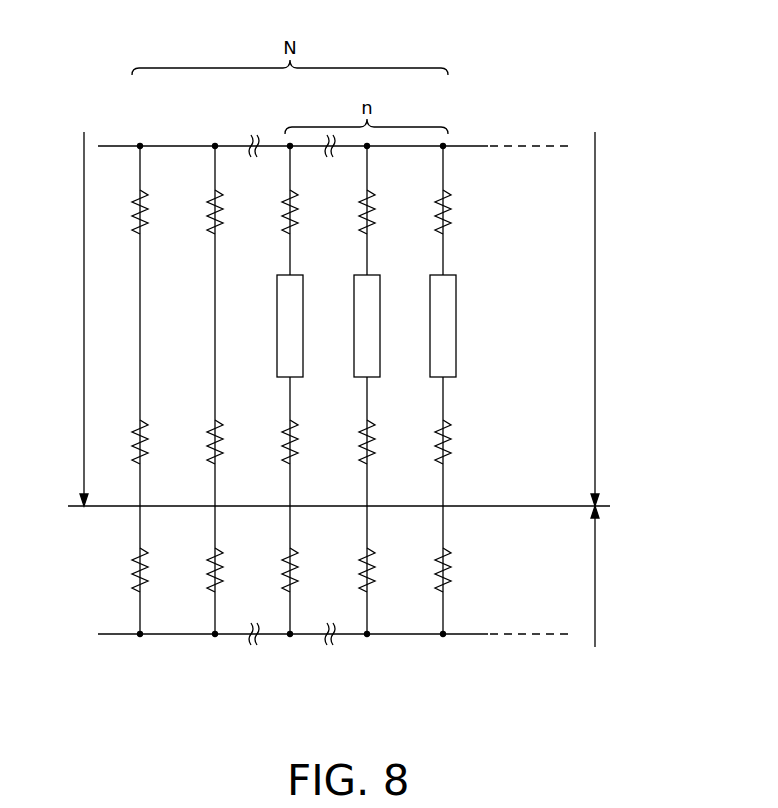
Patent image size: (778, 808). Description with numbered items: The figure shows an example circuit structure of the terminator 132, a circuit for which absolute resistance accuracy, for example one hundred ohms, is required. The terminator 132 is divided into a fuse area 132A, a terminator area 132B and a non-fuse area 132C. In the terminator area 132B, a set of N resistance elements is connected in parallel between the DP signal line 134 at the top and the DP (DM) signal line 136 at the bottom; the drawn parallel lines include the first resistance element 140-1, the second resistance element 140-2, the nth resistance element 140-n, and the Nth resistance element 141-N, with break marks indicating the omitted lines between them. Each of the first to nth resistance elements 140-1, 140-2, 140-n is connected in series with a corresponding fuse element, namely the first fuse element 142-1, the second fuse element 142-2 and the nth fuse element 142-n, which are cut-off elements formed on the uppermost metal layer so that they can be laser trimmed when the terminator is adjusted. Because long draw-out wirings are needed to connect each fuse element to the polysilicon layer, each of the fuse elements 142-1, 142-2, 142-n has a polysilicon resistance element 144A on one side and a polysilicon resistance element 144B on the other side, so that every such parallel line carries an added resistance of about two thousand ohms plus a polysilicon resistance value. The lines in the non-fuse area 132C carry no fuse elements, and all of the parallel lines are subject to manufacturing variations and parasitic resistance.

The terminator 132 is at (574, 60).
The fuse area 132A is at (617, 319).
The terminator area 132B is at (617, 607).
The non-fuse area 132C is at (61, 319).
The DP signal line 134 is at (422, 146).
The DP signal line 136 is at (394, 634).
The first resistance element 140-1 is at (448, 570).
The second resistance element 140-2 is at (362, 575).
The nth resistance element 140-n is at (285, 575).
The terminator resistor 141-N is at (135, 575).
The first fuse element 142-1 is at (457, 307).
The second fuse element 142-2 is at (380, 307).
The nth fuse element 142-n is at (303, 307).
The polysilicon resistance element 144A is at (448, 443).
The polysilicon resistance element 144B is at (450, 213).